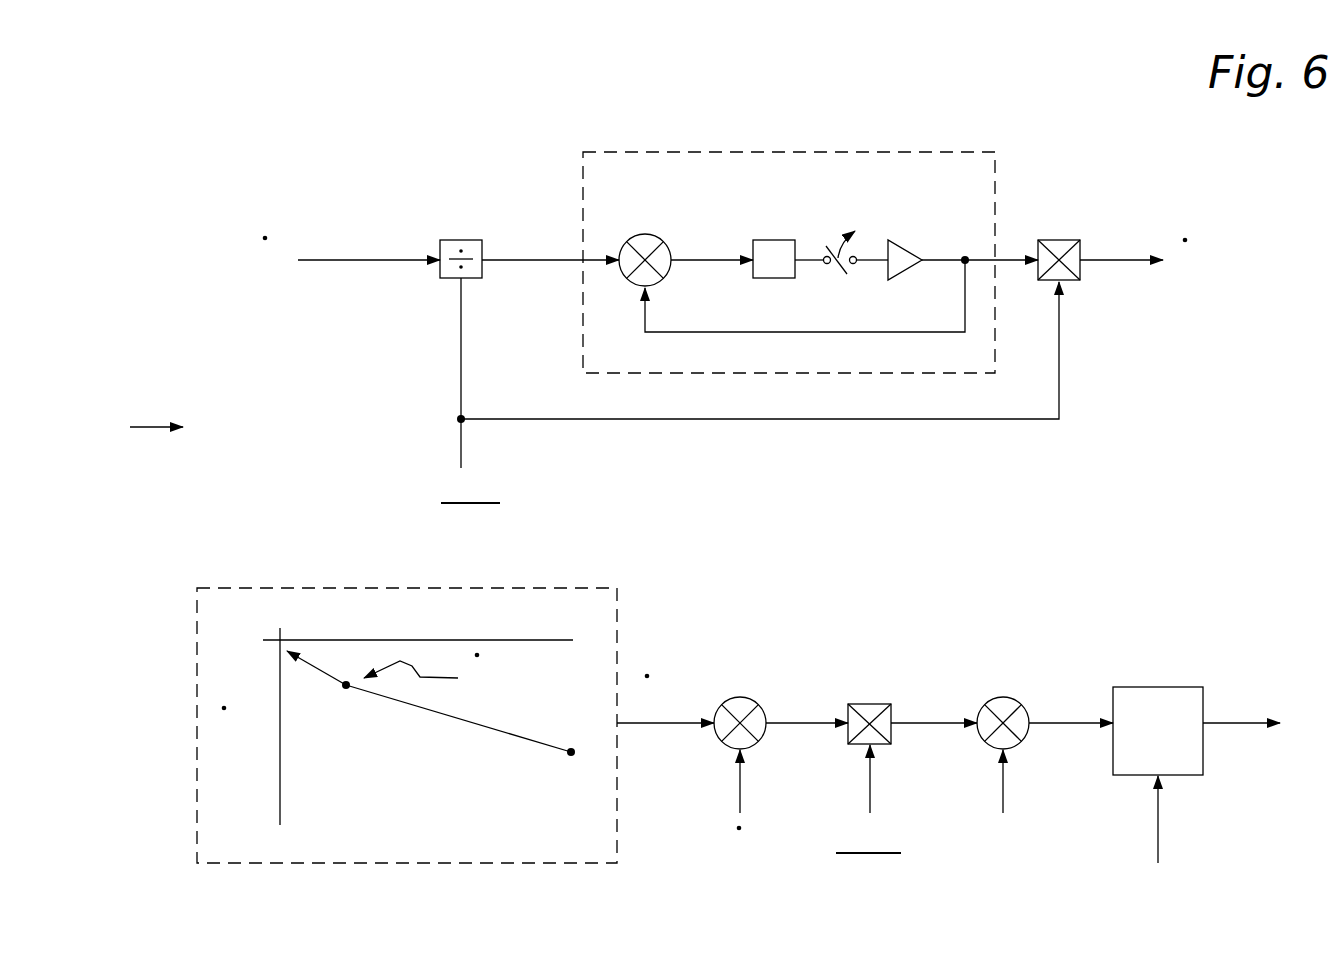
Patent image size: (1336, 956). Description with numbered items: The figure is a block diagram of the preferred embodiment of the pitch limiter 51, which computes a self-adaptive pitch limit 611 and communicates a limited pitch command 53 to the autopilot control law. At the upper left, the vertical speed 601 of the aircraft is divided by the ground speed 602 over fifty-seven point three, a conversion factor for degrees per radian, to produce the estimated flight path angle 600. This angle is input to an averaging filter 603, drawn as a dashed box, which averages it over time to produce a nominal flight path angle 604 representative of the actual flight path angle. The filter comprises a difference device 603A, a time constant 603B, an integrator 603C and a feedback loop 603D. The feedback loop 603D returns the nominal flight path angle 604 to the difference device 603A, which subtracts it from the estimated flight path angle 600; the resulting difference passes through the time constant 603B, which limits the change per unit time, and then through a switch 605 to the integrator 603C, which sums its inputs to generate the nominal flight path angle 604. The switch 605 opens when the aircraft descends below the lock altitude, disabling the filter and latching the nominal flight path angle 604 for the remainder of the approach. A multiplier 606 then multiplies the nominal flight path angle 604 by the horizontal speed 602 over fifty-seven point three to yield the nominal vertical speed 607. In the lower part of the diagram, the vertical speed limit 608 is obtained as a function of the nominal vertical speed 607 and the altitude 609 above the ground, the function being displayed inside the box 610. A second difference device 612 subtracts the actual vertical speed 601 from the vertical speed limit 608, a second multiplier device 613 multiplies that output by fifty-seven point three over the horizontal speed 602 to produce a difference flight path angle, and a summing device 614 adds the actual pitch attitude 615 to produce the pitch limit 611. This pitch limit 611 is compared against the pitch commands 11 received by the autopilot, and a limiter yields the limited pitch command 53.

The pitch limiter 51 is at (137, 427).
The estimated flight path angle 600 is at (540, 188).
The vertical speed 601 is at (263, 232).
The ground speed 602 is at (443, 488).
The averaging filter 603 is at (958, 152).
The difference device 603A is at (643, 234).
The time constant 603B is at (756, 240).
The integrator 603C is at (906, 245).
The feedback loop 603D is at (777, 355).
The nominal flight path angle 604 is at (952, 212).
The switch 605 is at (844, 276).
The multiplier 606 is at (1076, 278).
The nominal vertical speed 607 is at (1198, 242).
The vertical speed limit 608 is at (215, 707).
The altitude 609 is at (420, 612).
The box 610 is at (197, 770).
The pitch limit 611 is at (1063, 692).
The second difference device 612 is at (750, 700).
The second multiplier device 613 is at (878, 705).
The summing device 614 is at (1000, 698).
The actual pitch attitude 615 is at (1012, 845).
The limited pitch command 53 is at (1245, 688).
The pitch commands 11 is at (1197, 827).